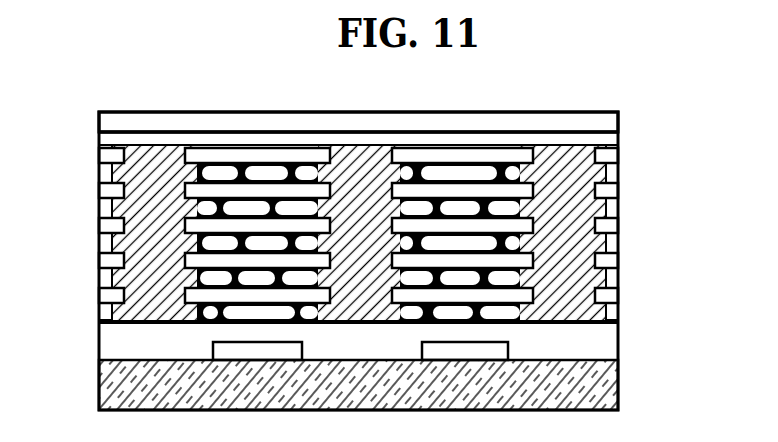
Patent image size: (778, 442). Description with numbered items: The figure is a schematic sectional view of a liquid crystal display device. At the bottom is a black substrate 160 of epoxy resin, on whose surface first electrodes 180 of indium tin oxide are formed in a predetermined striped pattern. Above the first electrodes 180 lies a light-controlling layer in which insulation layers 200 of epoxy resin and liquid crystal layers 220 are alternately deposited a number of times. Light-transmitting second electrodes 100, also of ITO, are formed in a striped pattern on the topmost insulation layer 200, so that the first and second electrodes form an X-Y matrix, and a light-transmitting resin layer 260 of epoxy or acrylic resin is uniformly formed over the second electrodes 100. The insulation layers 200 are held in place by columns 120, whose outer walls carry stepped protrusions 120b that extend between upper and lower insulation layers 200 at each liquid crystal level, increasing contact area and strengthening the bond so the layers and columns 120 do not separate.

The second electrodes 100 is at (616, 141).
The columns 120 is at (583, 204).
The insulating spacer portion 120b is at (527, 243).
The black substrate 160 is at (598, 383).
The first electrodes 180 is at (498, 350).
The insulation layers 200 is at (493, 150).
The liquid crystal layers 220 is at (463, 172).
The light-transmitting resin layer 260 is at (615, 124).